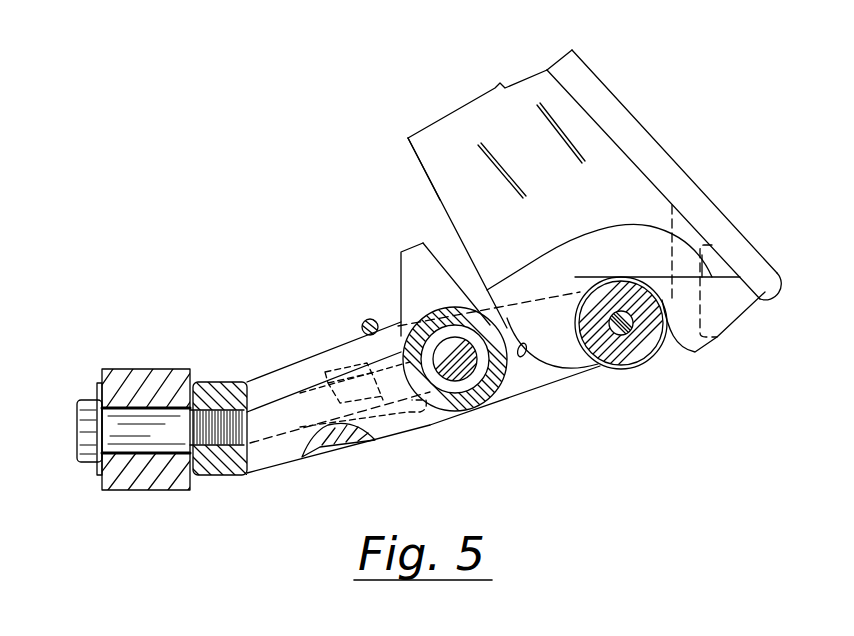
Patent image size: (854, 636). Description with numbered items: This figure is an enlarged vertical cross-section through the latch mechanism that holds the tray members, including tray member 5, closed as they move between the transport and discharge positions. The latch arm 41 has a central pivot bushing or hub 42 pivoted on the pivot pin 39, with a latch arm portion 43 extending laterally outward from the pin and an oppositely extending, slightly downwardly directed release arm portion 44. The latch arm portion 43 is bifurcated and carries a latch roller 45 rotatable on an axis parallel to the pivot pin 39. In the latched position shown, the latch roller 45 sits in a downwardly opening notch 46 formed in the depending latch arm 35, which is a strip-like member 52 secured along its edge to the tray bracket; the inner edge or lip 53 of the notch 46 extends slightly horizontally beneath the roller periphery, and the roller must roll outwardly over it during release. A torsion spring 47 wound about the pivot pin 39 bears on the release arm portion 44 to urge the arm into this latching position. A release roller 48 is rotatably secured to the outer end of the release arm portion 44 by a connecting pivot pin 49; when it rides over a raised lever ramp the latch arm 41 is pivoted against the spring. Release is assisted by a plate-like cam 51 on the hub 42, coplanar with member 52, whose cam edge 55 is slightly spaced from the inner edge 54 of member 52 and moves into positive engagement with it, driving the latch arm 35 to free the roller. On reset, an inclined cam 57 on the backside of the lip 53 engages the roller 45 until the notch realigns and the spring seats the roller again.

The tray member 5 is at (786, 290).
The depending latch arm 35 is at (615, 86).
The pivot pin 39 is at (458, 376).
The latch arm 41 is at (300, 358).
The central pivot bushing or hub 42 is at (477, 382).
The latch arm portion 43 is at (540, 383).
The release arm portion 44 is at (290, 458).
The latch roller 45 is at (650, 357).
The notch 46 is at (668, 330).
The torsion spring 47 is at (370, 318).
The release roller 48 is at (160, 369).
The connecting pivot pin 49 is at (84, 398).
The cam 51 is at (403, 255).
The strip-like member 52 is at (500, 105).
The inner edge or lip 53 is at (583, 357).
The inner edge 54 is at (420, 163).
The cam edge 55 is at (436, 258).
The inclined cam 57 is at (543, 338).